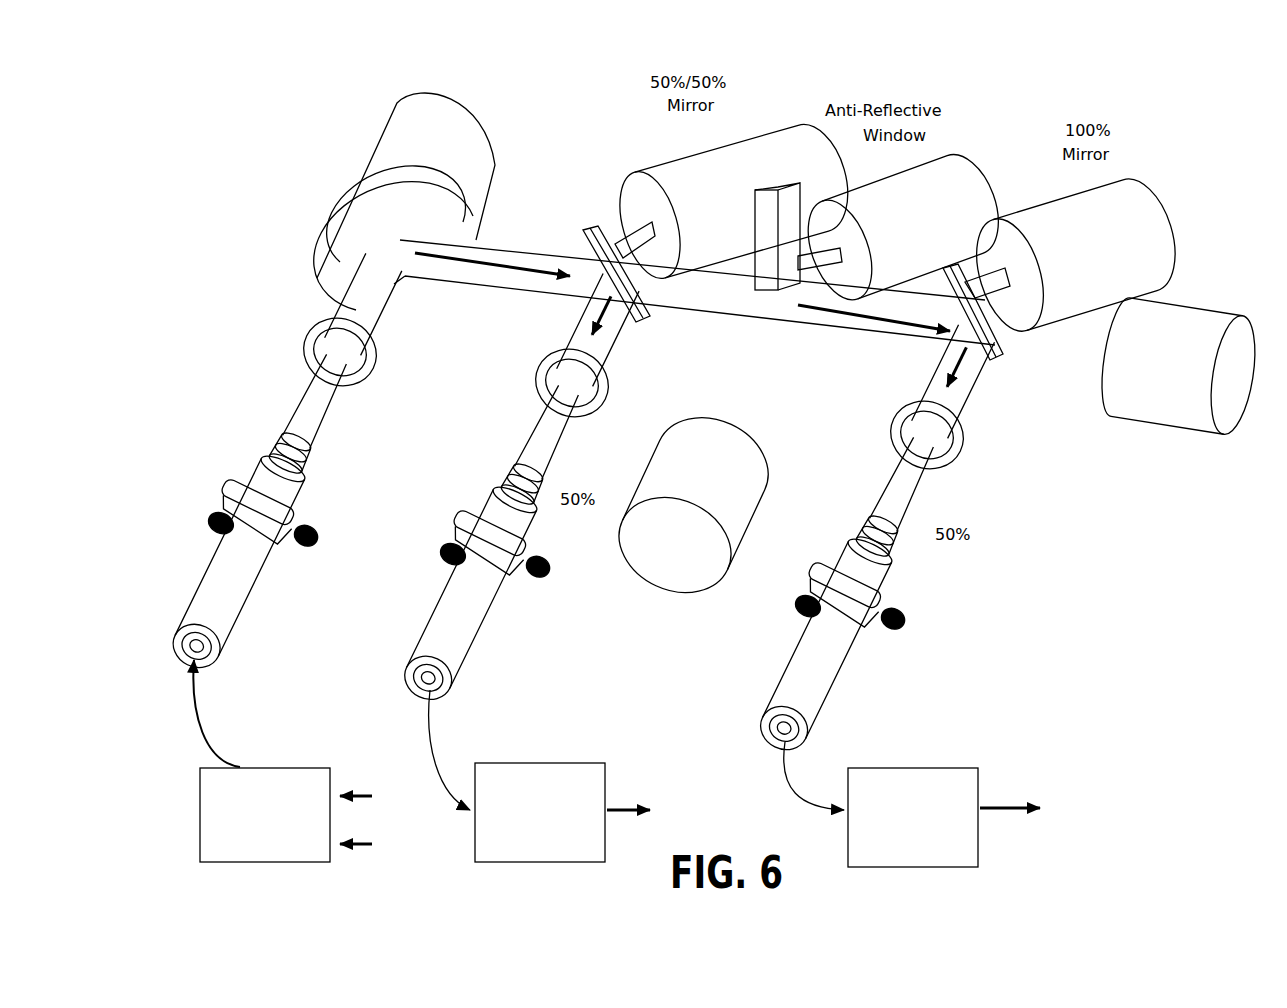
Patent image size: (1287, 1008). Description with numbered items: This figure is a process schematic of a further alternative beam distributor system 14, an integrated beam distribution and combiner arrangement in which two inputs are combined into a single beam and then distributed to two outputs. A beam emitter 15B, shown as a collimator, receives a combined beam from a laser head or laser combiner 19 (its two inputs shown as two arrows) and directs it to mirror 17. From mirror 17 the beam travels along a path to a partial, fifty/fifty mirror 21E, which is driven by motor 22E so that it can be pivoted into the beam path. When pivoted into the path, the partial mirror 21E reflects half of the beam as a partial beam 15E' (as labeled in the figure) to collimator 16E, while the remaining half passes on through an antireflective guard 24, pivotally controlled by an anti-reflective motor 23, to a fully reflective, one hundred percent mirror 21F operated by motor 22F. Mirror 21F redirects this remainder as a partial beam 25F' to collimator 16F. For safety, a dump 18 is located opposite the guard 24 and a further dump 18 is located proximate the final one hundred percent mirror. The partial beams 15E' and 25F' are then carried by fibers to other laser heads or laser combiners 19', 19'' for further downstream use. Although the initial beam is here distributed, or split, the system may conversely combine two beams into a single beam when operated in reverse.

The beam distributor system 14 is at (235, 290).
The mirror 17 is at (332, 188).
The partial mirror 21E is at (591, 222).
The motor 22E is at (734, 200).
The antireflective guard 24 is at (790, 178).
The anti-reflective motor 23 is at (903, 226).
The reflective mirror 21F is at (969, 283).
The motor 22F is at (1075, 254).
The dump 18 is at (932, 459).
The split beam path tube 15E' is at (653, 330).
The partial beam 25F' is at (1003, 397).
The beam emitter 15B is at (248, 622).
The collimator 16E is at (490, 652).
The collimator 16F is at (847, 685).
The laser head or laser combiner 19 is at (282, 761).
The laser head or laser combiner 19' is at (550, 776).
The laser head or laser combiner 19'' is at (924, 795).